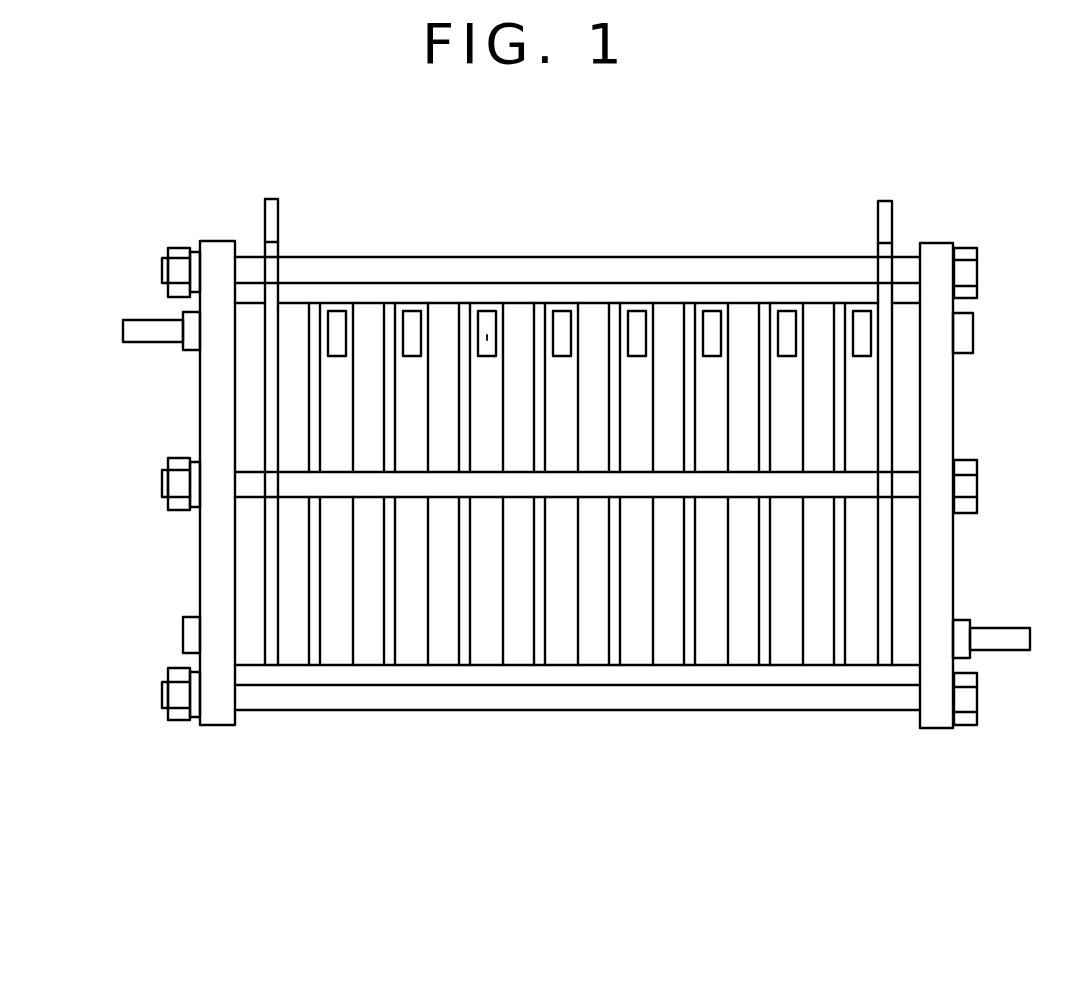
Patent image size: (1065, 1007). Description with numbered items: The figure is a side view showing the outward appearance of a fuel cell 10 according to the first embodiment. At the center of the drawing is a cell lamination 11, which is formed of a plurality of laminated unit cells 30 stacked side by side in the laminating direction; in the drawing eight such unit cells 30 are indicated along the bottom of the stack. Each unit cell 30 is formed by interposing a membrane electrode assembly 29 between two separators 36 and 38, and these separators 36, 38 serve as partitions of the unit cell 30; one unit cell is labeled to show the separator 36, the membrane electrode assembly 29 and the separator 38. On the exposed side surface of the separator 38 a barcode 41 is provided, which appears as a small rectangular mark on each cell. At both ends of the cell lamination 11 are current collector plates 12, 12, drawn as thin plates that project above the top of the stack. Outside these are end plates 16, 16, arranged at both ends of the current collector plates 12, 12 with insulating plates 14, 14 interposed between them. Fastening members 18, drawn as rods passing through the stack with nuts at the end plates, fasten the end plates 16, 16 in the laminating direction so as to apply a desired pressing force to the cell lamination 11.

The fuel cell 10 is at (763, 150).
The cell lamination 11 is at (576, 495).
The current collector plate 12 is at (280, 213).
The insulating plate 14 is at (245, 399).
The end plate 16 is at (215, 583).
The fastening member 18 is at (183, 247).
The membrane electrode assembly 29 is at (463, 313).
The unit cell 30 is at (575, 458).
The separator 36 is at (443, 315).
The separator 38 is at (485, 313).
The barcode 41 is at (552, 269).